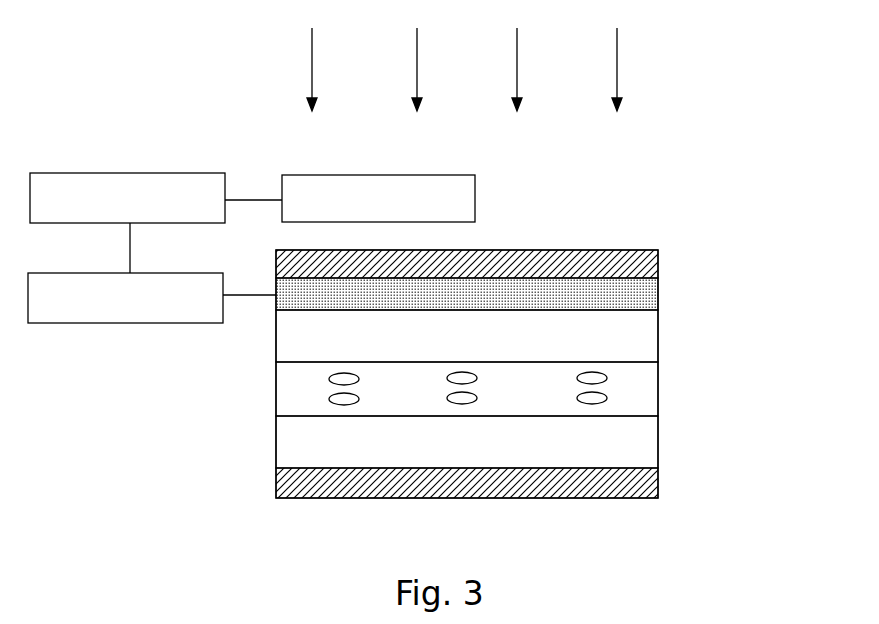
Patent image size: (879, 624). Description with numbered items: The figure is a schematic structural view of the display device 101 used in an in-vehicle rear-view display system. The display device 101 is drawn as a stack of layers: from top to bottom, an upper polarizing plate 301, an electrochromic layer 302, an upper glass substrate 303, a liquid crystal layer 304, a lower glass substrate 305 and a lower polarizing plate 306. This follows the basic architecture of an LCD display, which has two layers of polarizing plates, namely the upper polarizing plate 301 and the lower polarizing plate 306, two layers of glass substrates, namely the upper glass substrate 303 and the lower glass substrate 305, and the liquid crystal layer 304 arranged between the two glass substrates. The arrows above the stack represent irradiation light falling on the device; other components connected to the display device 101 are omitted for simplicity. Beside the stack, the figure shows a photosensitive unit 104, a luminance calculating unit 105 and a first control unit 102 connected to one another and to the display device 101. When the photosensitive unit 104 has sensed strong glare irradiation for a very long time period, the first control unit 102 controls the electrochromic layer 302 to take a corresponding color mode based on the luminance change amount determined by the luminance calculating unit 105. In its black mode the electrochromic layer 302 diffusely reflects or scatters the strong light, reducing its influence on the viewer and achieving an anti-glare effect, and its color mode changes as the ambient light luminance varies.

The display device 101 is at (553, 375).
The first control unit 102 is at (165, 273).
The photosensitive unit 104 is at (418, 175).
The luminance calculating unit 105 is at (165, 173).
The upper polarizing plate 301 is at (658, 263).
The electrochromic layer 302 is at (658, 295).
The upper glass substrate 303 is at (658, 336).
The liquid crystal layer 304 is at (658, 390).
The lower glass substrate 305 is at (658, 440).
The lower polarizing plate 306 is at (513, 483).